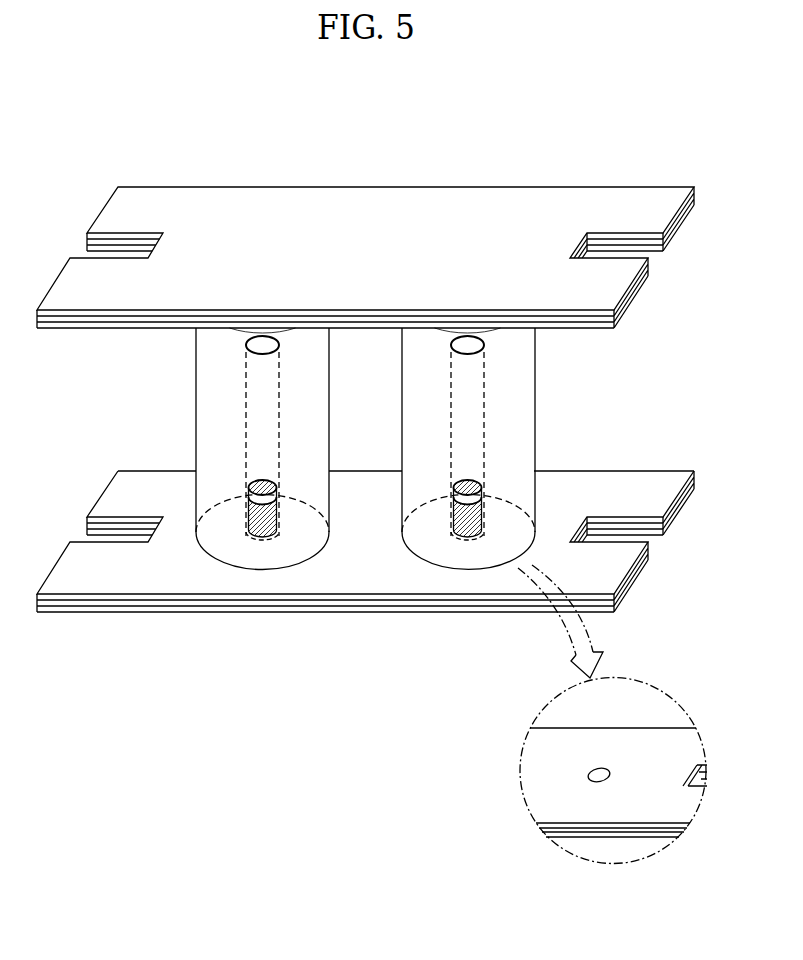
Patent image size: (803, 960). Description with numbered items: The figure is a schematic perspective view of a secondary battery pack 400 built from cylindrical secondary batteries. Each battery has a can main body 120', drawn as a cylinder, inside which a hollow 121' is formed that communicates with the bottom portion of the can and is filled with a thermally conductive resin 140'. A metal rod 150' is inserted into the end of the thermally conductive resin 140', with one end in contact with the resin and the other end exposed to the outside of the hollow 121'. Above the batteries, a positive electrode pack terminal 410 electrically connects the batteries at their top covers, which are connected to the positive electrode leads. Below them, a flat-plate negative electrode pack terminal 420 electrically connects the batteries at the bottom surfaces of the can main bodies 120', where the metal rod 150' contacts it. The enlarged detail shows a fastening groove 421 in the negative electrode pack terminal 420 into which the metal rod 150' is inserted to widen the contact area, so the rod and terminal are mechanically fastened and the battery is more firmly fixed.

The secondary battery pack 400 is at (360, 99).
The positive electrode pack terminal 410 is at (154, 197).
The negative electrode pack terminal 420 is at (112, 577).
The fastening groove 421 is at (608, 771).
The can main body 120' is at (400, 449).
The hollow 121' is at (425, 446).
The thermally conductive resin 140' is at (425, 366).
The metal rod 150' is at (369, 577).